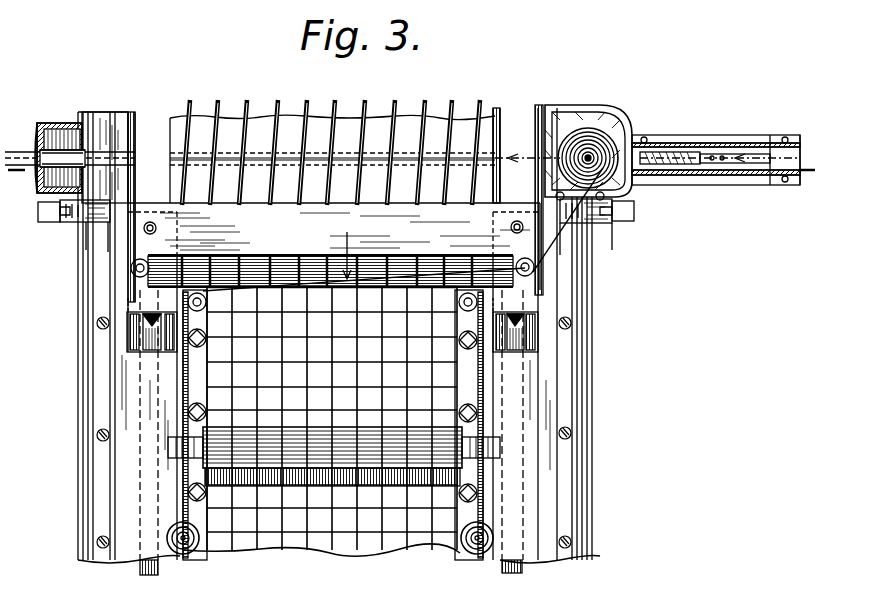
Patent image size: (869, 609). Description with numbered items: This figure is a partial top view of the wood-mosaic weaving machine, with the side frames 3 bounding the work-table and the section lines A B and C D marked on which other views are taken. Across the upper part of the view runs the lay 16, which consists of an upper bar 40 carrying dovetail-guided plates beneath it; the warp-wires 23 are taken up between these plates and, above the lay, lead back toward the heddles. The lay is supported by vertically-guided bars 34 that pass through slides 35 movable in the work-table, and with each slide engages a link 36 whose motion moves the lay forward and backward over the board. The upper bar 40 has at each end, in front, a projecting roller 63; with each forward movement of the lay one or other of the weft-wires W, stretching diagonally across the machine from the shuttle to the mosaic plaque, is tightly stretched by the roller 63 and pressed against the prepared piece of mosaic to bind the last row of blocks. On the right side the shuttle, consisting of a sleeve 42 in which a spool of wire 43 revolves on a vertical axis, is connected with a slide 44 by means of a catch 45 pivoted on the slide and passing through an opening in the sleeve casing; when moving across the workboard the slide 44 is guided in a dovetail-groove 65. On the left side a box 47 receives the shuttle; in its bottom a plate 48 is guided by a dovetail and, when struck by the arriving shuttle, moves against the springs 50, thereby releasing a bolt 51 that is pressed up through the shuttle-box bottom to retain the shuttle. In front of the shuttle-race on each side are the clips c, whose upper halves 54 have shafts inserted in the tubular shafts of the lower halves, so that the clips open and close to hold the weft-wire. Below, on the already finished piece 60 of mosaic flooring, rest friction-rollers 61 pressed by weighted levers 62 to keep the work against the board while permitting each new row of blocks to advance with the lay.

The side frame plates 3 is at (90, 303).
The lay 16 is at (334, 246).
The warp-wires 23 is at (246, 108).
The vertically-guided bars 34 is at (150, 222).
The slides 35 is at (130, 318).
The link 36 is at (145, 577).
The upper bar 40 is at (368, 244).
The sleeve 42 is at (630, 128).
The spool of wire 43 is at (591, 145).
The slide 44 is at (724, 164).
The catch 45 is at (655, 144).
The box 47 is at (58, 124).
The plate 48 is at (40, 160).
The springs 50 is at (37, 128).
The bolt 51 is at (128, 113).
The upper halves of the clips 54 is at (90, 212).
The finished piece of mosaic flooring 60 is at (333, 423).
The friction-rollers 61 is at (283, 436).
The weighted levers 62 is at (183, 522).
The projecting rollers 63 is at (148, 312).
The dovetail-groove 65 is at (178, 158).
The section line A B A is at (16, 153).
The section line A B is at (727, 153).
The section line C D C is at (26, 211).
The section line C D is at (655, 207).
The clips c is at (62, 218).
The wire belt W is at (560, 252).